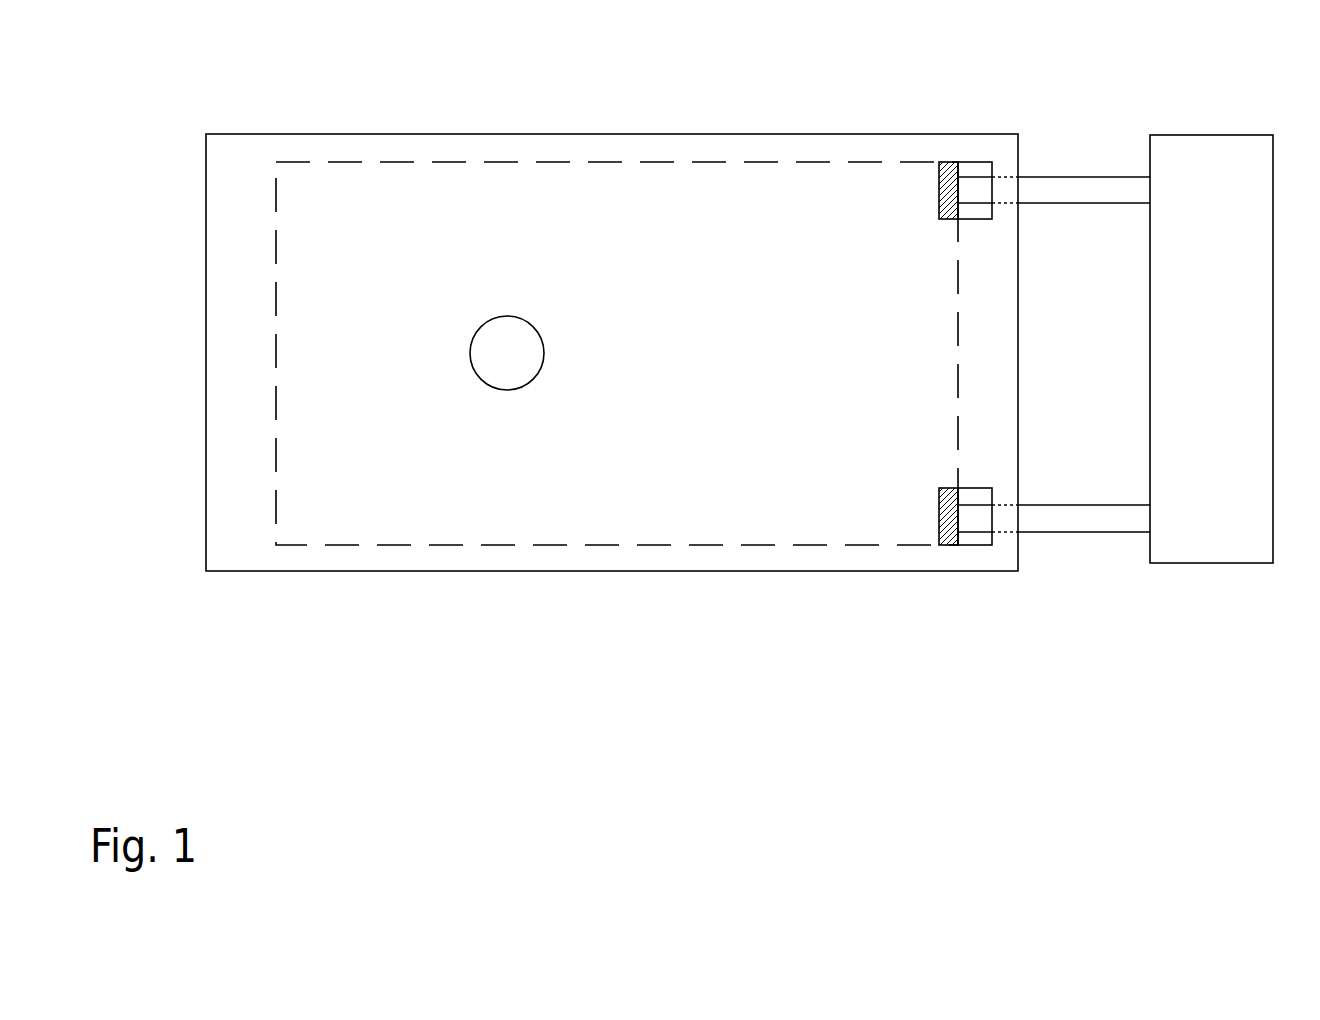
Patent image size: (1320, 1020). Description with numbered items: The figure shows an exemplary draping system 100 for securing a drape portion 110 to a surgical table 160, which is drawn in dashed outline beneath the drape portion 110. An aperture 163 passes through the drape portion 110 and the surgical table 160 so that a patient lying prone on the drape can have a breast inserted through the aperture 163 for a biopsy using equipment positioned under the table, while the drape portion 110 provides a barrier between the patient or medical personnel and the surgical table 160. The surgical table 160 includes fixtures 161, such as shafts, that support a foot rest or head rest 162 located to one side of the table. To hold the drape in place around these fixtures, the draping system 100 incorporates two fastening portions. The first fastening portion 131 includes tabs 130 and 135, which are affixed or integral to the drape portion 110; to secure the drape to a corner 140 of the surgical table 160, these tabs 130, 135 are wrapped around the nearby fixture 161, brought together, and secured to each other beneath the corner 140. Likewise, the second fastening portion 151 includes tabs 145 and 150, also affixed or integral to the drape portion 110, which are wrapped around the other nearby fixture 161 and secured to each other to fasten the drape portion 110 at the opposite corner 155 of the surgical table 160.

The draping system 100 is at (918, 675).
The drape portion 110 is at (227, 176).
The tab 130 is at (997, 152).
The first fastening portion 131 is at (1030, 101).
The tab 135 is at (1005, 188).
The corner 140 is at (940, 177).
The tab 145 is at (1000, 560).
The tab 150 is at (1008, 515).
The second fastening portion 151 is at (1027, 600).
The corner 155 is at (948, 534).
The surgical table 160 is at (627, 545).
The fixtures 161 is at (1110, 176).
The foot rest or head rest 162 is at (1217, 563).
The aperture 163 is at (522, 318).